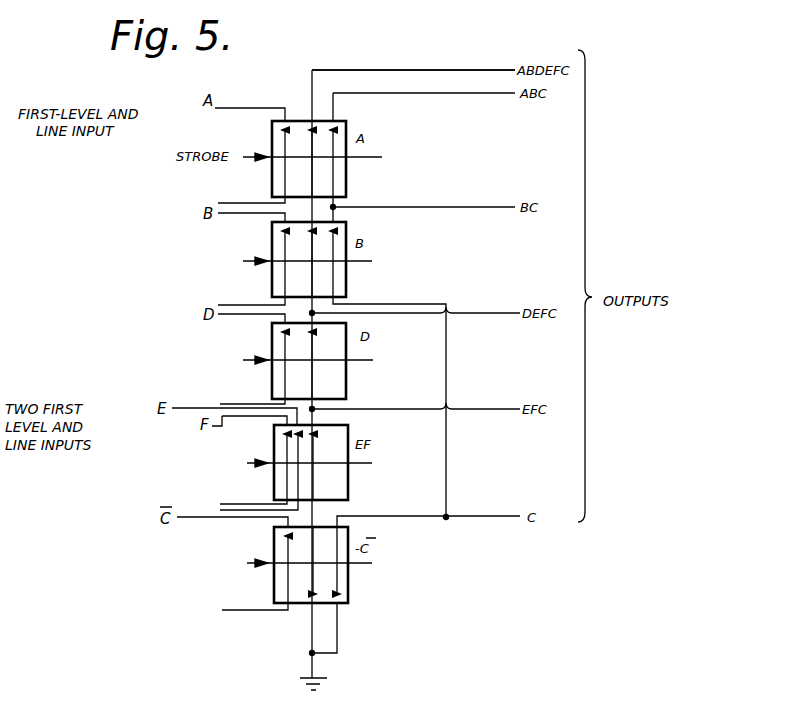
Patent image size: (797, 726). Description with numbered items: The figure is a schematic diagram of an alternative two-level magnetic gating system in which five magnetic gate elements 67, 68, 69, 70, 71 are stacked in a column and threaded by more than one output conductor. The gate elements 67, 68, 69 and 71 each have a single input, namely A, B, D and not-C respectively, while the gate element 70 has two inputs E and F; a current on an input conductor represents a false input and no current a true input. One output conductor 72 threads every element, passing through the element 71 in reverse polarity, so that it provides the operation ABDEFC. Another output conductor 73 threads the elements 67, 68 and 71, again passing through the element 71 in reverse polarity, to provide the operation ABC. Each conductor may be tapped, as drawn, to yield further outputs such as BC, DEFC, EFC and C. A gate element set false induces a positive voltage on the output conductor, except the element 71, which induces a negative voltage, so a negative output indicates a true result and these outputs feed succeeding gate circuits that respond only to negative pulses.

The magnetic gate element 67 is at (343, 176).
The magnetic gate element 68 is at (340, 278).
The magnetic gate element 69 is at (333, 376).
The magnetic gate element 70 is at (333, 479).
The magnetic gate element 71 is at (341, 581).
The output conductor 72 is at (380, 70).
The output conductor 73 is at (430, 93).